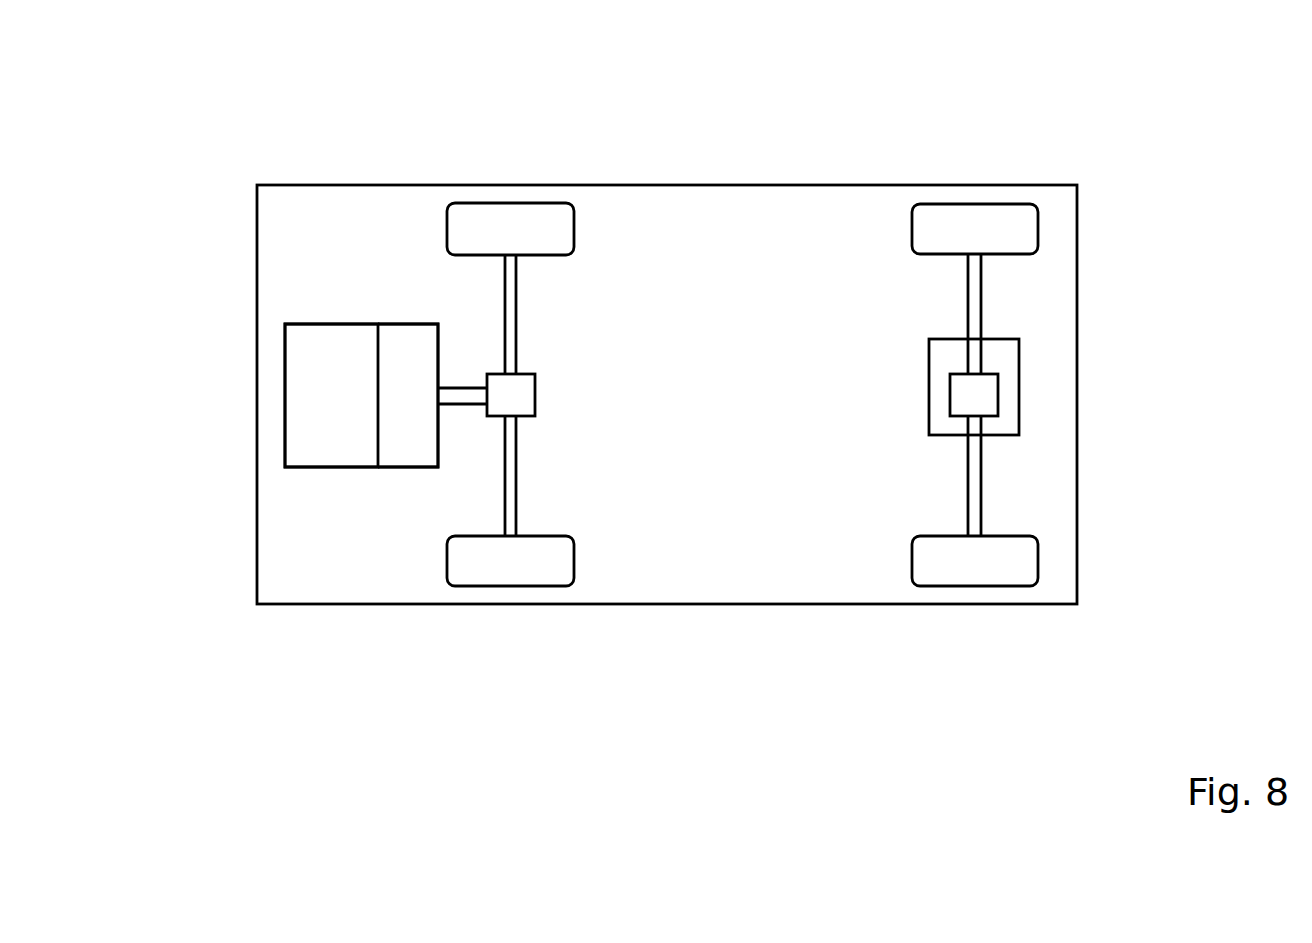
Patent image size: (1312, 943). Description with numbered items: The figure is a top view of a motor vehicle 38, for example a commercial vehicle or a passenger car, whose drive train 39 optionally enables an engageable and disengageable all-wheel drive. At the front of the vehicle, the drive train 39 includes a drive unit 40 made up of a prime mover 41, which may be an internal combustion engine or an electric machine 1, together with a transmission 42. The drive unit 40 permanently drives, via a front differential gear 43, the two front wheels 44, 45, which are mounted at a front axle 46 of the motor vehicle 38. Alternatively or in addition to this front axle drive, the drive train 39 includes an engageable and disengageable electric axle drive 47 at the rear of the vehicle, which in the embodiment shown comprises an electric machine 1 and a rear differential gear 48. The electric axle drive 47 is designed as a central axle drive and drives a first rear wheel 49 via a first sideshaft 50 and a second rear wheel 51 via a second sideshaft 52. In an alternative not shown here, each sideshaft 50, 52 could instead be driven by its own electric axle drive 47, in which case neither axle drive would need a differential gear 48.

The electric machine 1 is at (1025, 264).
The motor vehicle 38 is at (375, 623).
The drive train 39 is at (843, 373).
The drive unit 40 is at (275, 306).
The prime mover 41 is at (326, 348).
The transmission 42 is at (412, 348).
The front differential gear 43 is at (518, 392).
The front wheel 44 is at (495, 227).
The front wheel 45 is at (503, 568).
The front axle 46 is at (467, 483).
The electric axle drive 47 is at (1027, 365).
The rear differential gear 48 is at (982, 397).
The first rear wheel 49 is at (972, 223).
The first sideshaft 50 is at (971, 298).
The second rear wheel 51 is at (967, 568).
The second sideshaft 52 is at (973, 463).